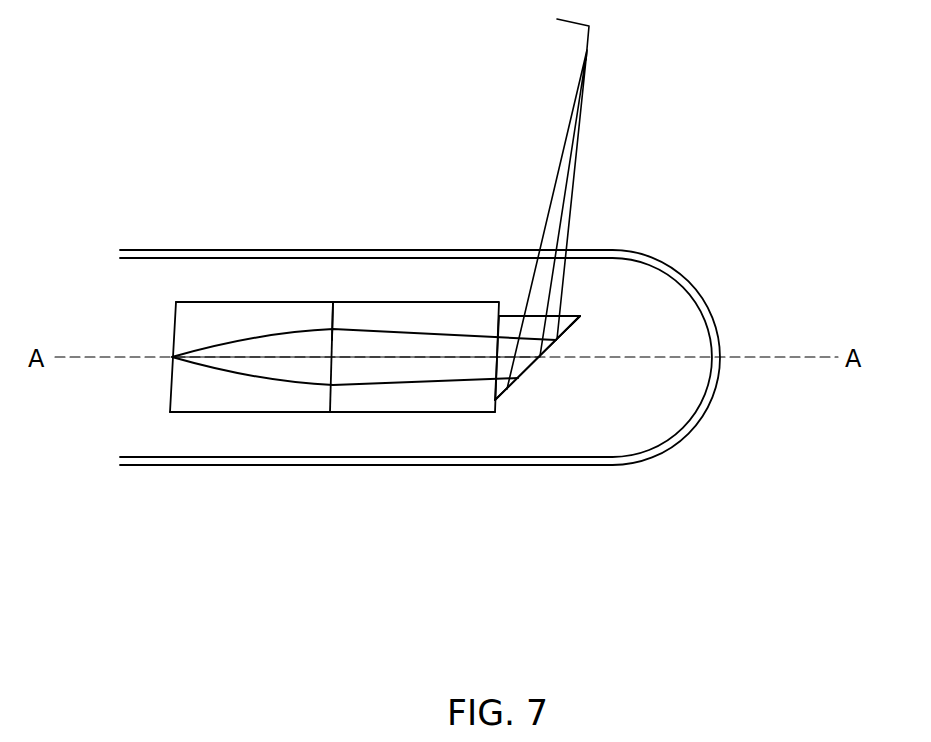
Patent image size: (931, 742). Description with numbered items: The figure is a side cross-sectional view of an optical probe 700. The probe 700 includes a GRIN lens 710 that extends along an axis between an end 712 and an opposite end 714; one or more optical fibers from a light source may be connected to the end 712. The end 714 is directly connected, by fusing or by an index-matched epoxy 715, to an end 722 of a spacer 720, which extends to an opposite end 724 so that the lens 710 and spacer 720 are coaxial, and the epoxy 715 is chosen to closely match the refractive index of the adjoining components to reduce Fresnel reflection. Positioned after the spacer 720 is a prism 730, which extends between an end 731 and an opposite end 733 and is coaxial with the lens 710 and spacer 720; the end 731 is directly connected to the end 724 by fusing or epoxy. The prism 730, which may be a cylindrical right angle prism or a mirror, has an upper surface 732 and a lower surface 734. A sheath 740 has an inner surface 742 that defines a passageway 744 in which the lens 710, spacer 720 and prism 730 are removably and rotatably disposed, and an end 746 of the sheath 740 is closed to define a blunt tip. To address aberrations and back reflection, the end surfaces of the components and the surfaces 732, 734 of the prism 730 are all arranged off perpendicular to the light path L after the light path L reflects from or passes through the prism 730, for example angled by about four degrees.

The optical probe 700 is at (280, 427).
The GRIN lens 710 is at (205, 302).
The end 712 is at (170, 388).
The end 714 is at (331, 385).
The epoxy 715 is at (333, 329).
The spacer 720 is at (433, 302).
The end 722 is at (333, 329).
The end 724 is at (495, 412).
The prism 730 is at (557, 341).
The end 731 is at (499, 326).
The upper surface 732 is at (572, 316).
The end 733 is at (575, 317).
The lower surface 734 is at (540, 357).
The sheath 740 is at (667, 262).
The inner surface 742 is at (383, 458).
The passageway 744 is at (633, 320).
The end 746 is at (704, 416).
The light path L is at (590, 53).